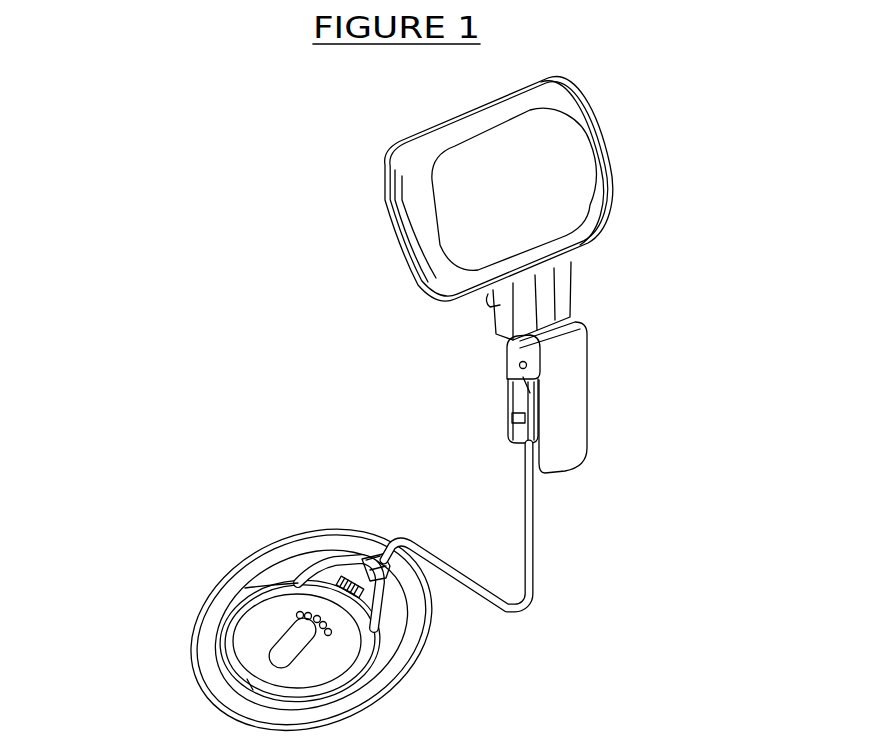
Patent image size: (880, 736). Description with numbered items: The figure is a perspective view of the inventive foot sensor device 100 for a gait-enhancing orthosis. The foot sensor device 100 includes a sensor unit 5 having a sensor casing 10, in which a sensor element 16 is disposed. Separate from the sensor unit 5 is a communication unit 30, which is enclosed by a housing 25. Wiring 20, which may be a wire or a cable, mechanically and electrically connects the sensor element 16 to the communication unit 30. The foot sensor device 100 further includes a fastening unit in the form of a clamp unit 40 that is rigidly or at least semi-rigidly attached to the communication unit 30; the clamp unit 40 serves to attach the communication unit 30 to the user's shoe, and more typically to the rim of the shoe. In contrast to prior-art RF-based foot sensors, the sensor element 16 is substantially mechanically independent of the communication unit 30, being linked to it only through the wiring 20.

The foot sensor device 100 is at (223, 293).
The communication unit 30 is at (622, 172).
The housing 25 is at (600, 216).
The clamp unit 40 is at (603, 368).
The wiring 20 is at (538, 560).
The sensor unit 5 is at (177, 628).
The sensor casing 10 is at (295, 553).
The sensor element 16 is at (333, 650).